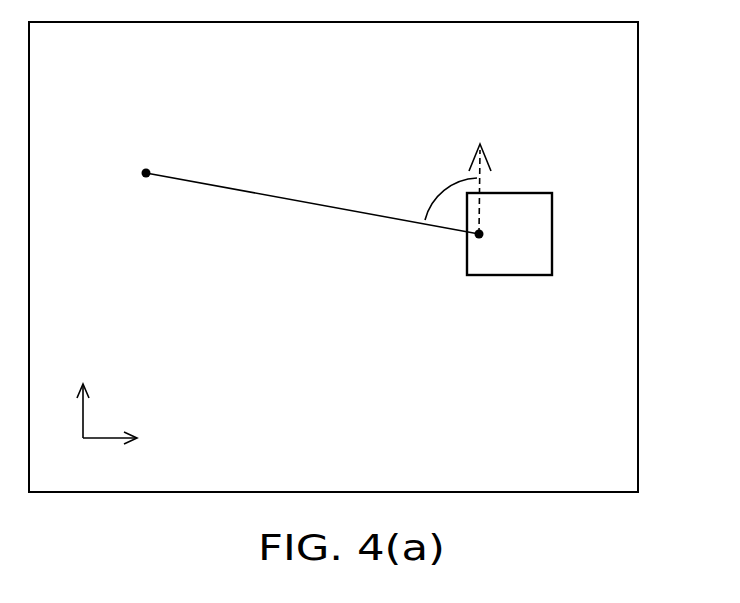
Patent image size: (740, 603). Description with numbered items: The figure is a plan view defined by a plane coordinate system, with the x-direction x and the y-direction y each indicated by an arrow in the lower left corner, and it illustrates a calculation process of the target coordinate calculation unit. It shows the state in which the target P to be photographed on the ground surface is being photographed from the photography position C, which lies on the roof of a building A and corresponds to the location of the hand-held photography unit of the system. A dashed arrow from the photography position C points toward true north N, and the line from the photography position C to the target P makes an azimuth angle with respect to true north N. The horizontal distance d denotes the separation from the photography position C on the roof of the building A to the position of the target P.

The target P is at (146, 173).
The photography position C is at (479, 234).
The building A is at (553, 225).
The true north N is at (540, 175).
The horizontal distance d is at (479, 234).
The x-direction x is at (123, 441).
The y-direction y is at (83, 398).